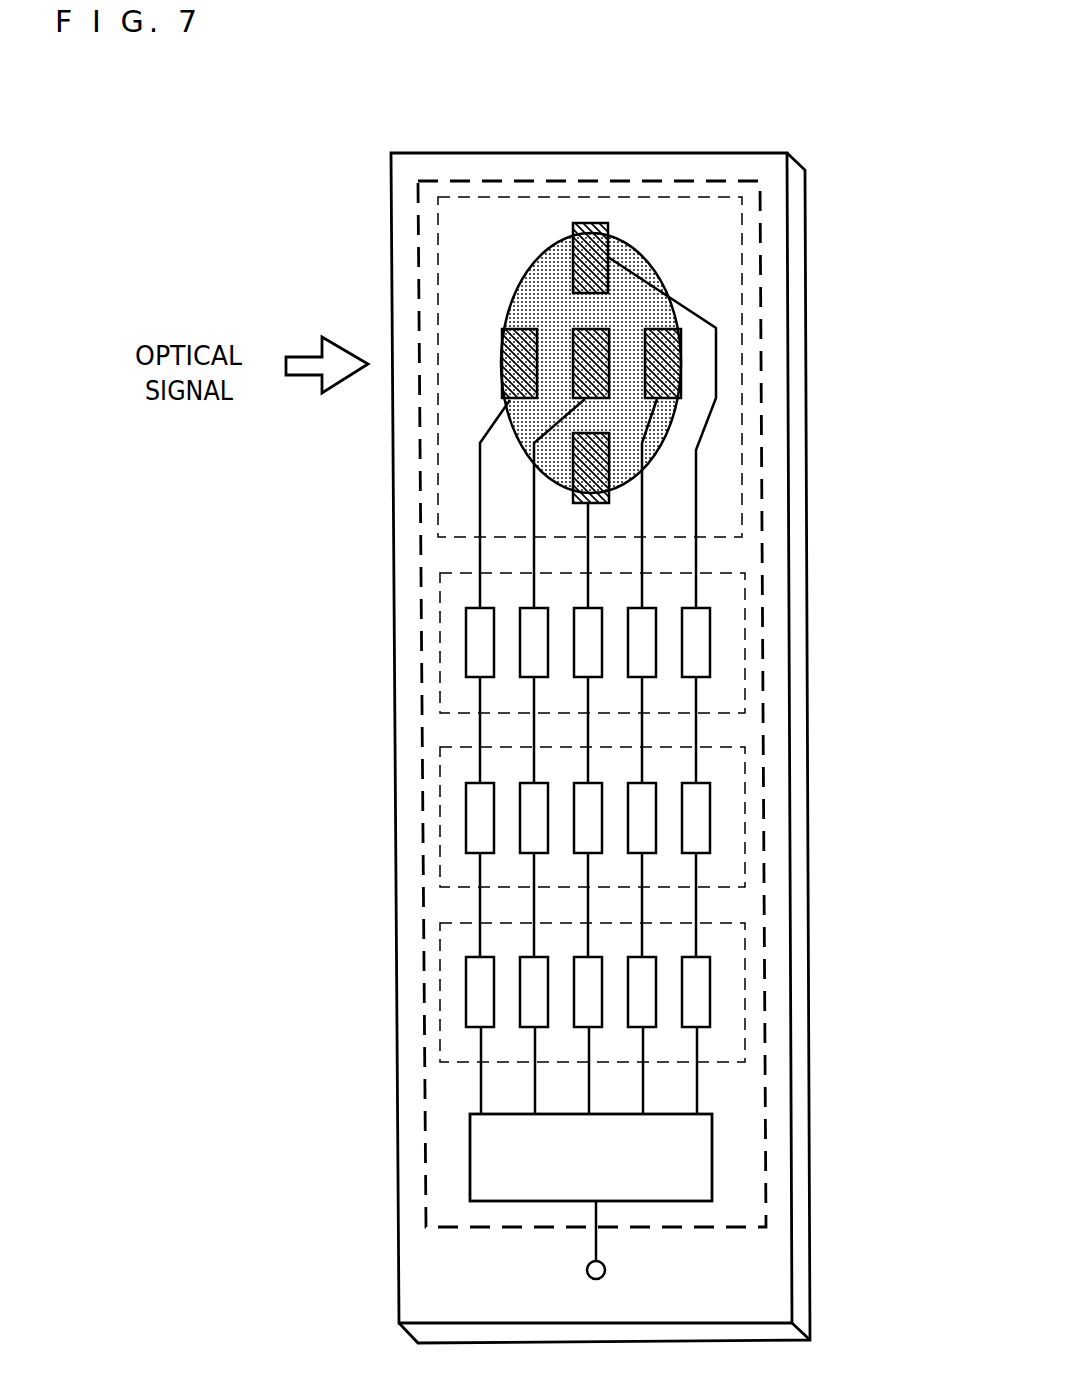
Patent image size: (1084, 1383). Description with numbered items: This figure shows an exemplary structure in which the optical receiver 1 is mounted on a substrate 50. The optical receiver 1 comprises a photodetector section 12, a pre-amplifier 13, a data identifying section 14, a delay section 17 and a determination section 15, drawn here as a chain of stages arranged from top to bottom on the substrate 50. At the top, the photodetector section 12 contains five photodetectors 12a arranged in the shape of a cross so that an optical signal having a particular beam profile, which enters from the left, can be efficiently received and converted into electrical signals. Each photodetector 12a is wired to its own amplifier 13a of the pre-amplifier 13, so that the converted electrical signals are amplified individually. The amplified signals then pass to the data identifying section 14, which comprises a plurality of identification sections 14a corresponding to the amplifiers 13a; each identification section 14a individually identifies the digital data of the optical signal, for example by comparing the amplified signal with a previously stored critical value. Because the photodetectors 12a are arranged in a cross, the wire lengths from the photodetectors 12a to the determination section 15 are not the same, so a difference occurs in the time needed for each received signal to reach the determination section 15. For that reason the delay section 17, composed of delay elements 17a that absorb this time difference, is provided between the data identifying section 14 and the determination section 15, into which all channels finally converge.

The optical receiver 1 is at (762, 373).
The substrate 50 is at (807, 428).
The photodetector section 12 is at (743, 277).
The photodetectors 12a is at (823, 195).
The pre-amplifier 13 is at (686, 639).
The amplifiers 13a is at (710, 632).
The data identifying section 14 is at (686, 815).
The identification sections 14a is at (710, 810).
The delay section 17 is at (686, 990).
The delay elements 17a is at (710, 983).
The determination section 15 is at (712, 1158).